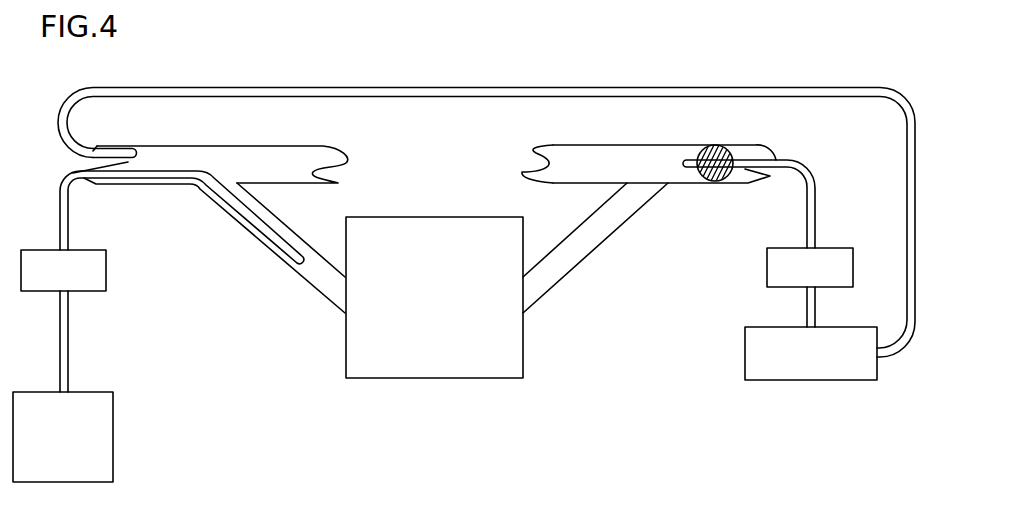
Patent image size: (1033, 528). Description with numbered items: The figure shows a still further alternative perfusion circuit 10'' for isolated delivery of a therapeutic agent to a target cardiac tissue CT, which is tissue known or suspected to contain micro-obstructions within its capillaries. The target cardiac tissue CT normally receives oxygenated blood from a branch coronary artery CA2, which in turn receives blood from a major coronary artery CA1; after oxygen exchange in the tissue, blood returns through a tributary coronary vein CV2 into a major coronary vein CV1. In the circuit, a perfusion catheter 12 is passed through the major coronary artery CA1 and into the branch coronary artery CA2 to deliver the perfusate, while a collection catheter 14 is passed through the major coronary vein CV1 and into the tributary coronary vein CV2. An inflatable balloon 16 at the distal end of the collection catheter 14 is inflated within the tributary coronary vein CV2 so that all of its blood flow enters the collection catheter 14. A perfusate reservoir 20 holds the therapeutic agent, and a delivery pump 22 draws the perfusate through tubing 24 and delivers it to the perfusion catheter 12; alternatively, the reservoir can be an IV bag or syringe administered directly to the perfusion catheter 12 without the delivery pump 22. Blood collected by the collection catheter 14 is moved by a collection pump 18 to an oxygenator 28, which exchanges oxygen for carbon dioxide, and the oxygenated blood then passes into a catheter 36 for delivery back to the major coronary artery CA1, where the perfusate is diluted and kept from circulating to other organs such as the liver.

The circuit 10'' is at (706, 44).
The perfusion catheter 12 is at (74, 175).
The collection catheter 14 is at (758, 160).
The inflatable balloon 16 is at (723, 148).
The collection pump 18 is at (836, 247).
The perfusate reservoir 20 is at (42, 391).
The delivery pump 22 is at (107, 268).
The tubing 24 is at (69, 335).
The oxygenator 28 is at (853, 327).
The catheter 36 is at (907, 170).
The major coronary artery CA1 is at (209, 146).
The branch coronary artery CA2 is at (287, 263).
The major coronary vein CV1 is at (640, 145).
The tributary coronary vein CV2 is at (567, 277).
The target cardiac tissue CT is at (523, 347).